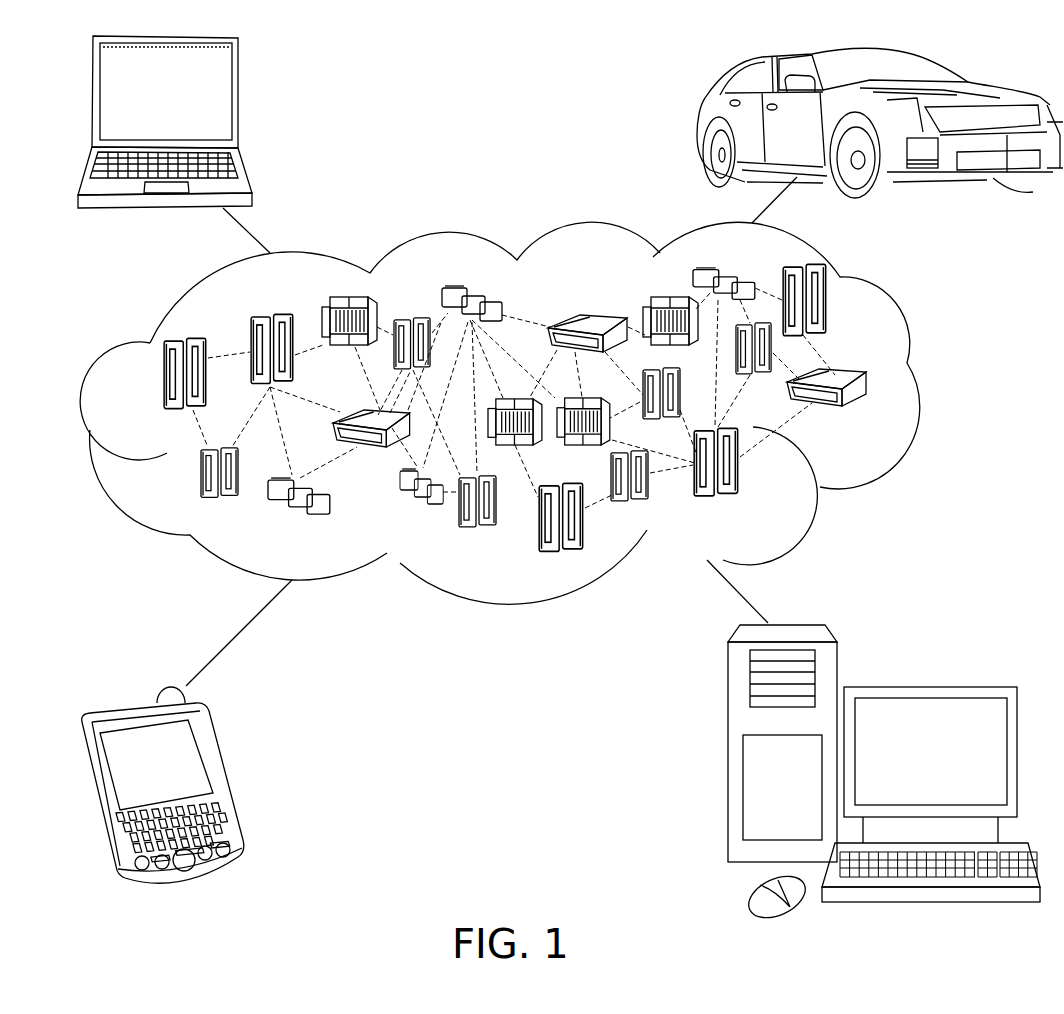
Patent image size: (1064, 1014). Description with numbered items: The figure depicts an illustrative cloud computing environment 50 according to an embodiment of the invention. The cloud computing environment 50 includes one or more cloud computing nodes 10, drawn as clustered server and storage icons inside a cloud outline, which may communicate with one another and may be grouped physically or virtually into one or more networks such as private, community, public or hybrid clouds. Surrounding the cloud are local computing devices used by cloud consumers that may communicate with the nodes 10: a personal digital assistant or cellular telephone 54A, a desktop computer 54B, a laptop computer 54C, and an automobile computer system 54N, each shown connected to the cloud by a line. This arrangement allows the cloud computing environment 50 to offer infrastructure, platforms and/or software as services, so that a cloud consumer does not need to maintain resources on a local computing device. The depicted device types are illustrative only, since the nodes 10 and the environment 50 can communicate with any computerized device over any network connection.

The cloud computing node 10 is at (876, 421).
The cloud computing environment 50 is at (930, 397).
The personal digital assistant or cellular telephone 54A is at (222, 778).
The desktop computer 54B is at (928, 687).
The laptop computer 54C is at (238, 100).
The automobile computer system 54N is at (700, 120).